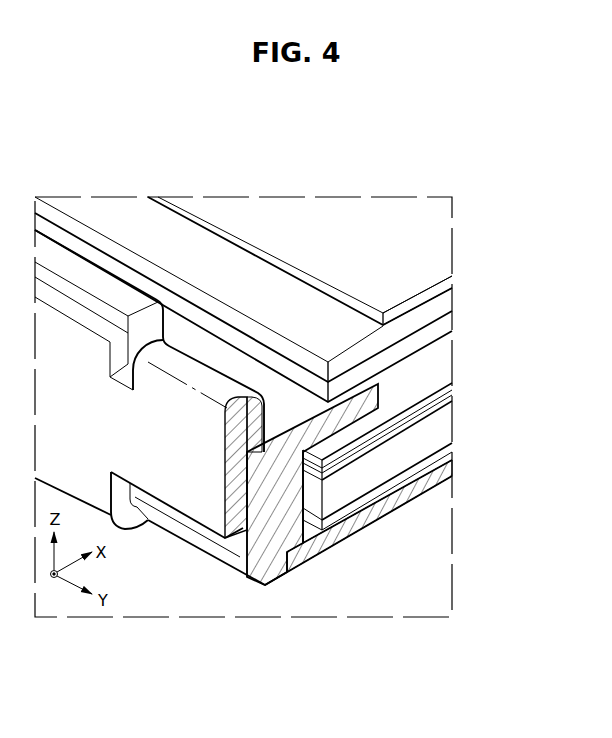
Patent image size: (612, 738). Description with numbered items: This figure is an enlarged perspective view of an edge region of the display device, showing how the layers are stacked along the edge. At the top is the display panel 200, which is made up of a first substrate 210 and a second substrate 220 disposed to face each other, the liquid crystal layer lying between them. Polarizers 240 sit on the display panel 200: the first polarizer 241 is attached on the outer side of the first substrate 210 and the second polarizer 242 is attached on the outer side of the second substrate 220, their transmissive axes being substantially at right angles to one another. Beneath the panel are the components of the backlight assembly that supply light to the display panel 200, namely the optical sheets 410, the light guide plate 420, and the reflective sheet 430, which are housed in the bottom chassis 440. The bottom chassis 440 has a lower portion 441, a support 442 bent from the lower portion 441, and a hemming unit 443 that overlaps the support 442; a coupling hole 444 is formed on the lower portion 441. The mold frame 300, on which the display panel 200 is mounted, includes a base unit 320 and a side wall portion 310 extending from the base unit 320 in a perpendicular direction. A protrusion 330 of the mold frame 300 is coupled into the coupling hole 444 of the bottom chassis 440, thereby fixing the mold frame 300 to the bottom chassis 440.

The display panel 200 is at (243, 258).
The first substrate 210 is at (245, 280).
The second substrate 220 is at (197, 318).
The polarizers 240 is at (475, 300).
The first polarizer 241 is at (448, 327).
The second polarizer 242 is at (407, 243).
The mold frame 300 is at (417, 506).
The side wall portion 310 is at (275, 497).
The base unit 320 is at (337, 418).
The protrusion 330 is at (270, 562).
The optical sheets 410 is at (447, 397).
The light guide plate 420 is at (437, 420).
The reflective sheet 430 is at (432, 463).
The bottom chassis 440 is at (206, 550).
The lower portion 441 is at (224, 595).
The support 442 is at (185, 472).
The hemming unit 443 is at (257, 425).
The coupling hole 444 is at (146, 527).